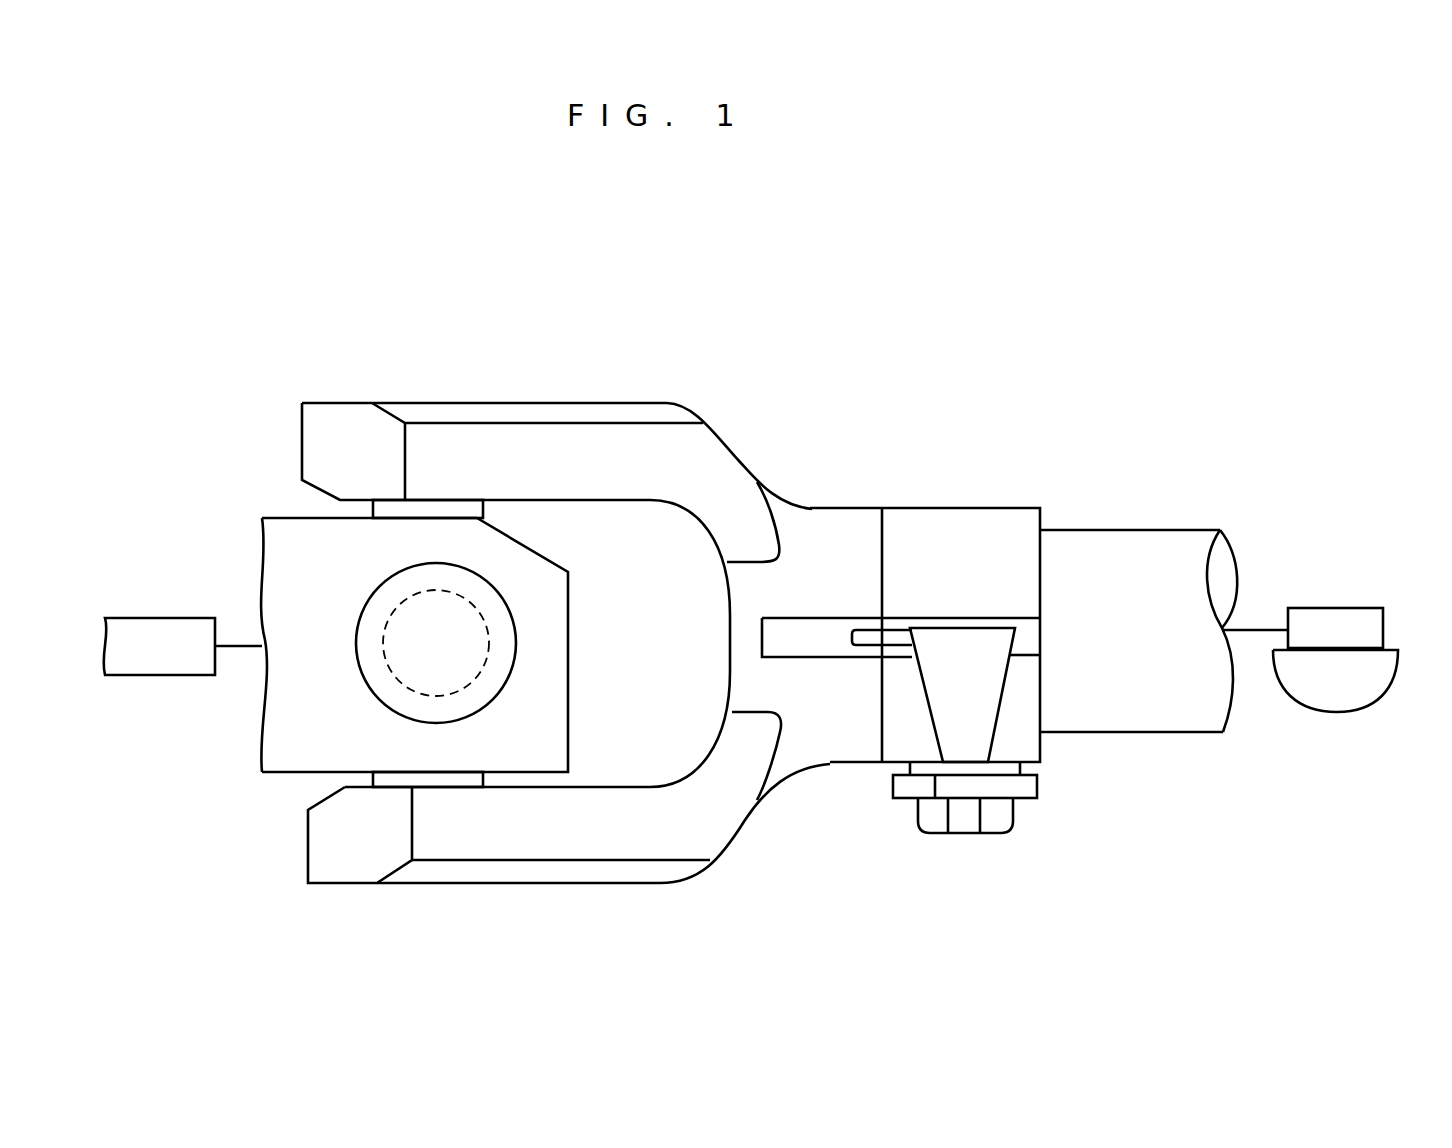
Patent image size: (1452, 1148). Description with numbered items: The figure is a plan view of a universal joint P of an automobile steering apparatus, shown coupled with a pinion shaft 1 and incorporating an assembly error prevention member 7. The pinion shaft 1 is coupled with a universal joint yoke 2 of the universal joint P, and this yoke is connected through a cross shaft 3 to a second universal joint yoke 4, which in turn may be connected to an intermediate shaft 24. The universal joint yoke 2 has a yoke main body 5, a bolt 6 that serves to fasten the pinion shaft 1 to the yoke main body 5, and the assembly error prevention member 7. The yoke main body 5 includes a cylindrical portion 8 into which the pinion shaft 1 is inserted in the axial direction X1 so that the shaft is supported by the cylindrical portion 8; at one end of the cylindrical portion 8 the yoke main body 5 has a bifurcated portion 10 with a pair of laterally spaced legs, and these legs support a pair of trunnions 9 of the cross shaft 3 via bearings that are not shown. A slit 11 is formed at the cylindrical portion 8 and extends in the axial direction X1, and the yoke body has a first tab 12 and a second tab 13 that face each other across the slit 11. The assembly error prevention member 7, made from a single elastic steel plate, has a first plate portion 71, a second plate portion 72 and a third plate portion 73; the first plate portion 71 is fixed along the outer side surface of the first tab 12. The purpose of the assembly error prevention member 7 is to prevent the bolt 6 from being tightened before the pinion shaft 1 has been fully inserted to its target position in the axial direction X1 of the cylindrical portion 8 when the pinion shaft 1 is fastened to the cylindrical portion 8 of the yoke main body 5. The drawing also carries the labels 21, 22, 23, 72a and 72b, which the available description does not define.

The pinion shaft 1 is at (1158, 558).
The universal joint yoke 2 is at (719, 620).
The cross shaft 3 is at (395, 678).
The universal joint yoke 4 is at (386, 645).
The yoke main body 5 is at (557, 397).
The bolt 6 is at (993, 662).
The assembly error prevention member 7 is at (920, 692).
The cylindrical portion 8 is at (949, 598).
The trunnions 9 is at (483, 510).
The bifurcated portion 10 is at (467, 433).
The slit 11 is at (802, 640).
The first tab 12 is at (1033, 682).
The second tab 13 is at (1030, 588).
The actuator 21 is at (1359, 656).
The motor 22 is at (1343, 703).
The gear 23 is at (1322, 617).
The intermediate shaft 24 is at (150, 640).
The first plate portion 71 is at (928, 808).
The second plate portion 72 is at (1014, 660).
The small-diameter end 72a is at (970, 763).
The large-diameter end 72b is at (973, 638).
The third plate portion 73 is at (888, 637).
The universal joint P is at (873, 337).
The axial direction X1 is at (1007, 469).